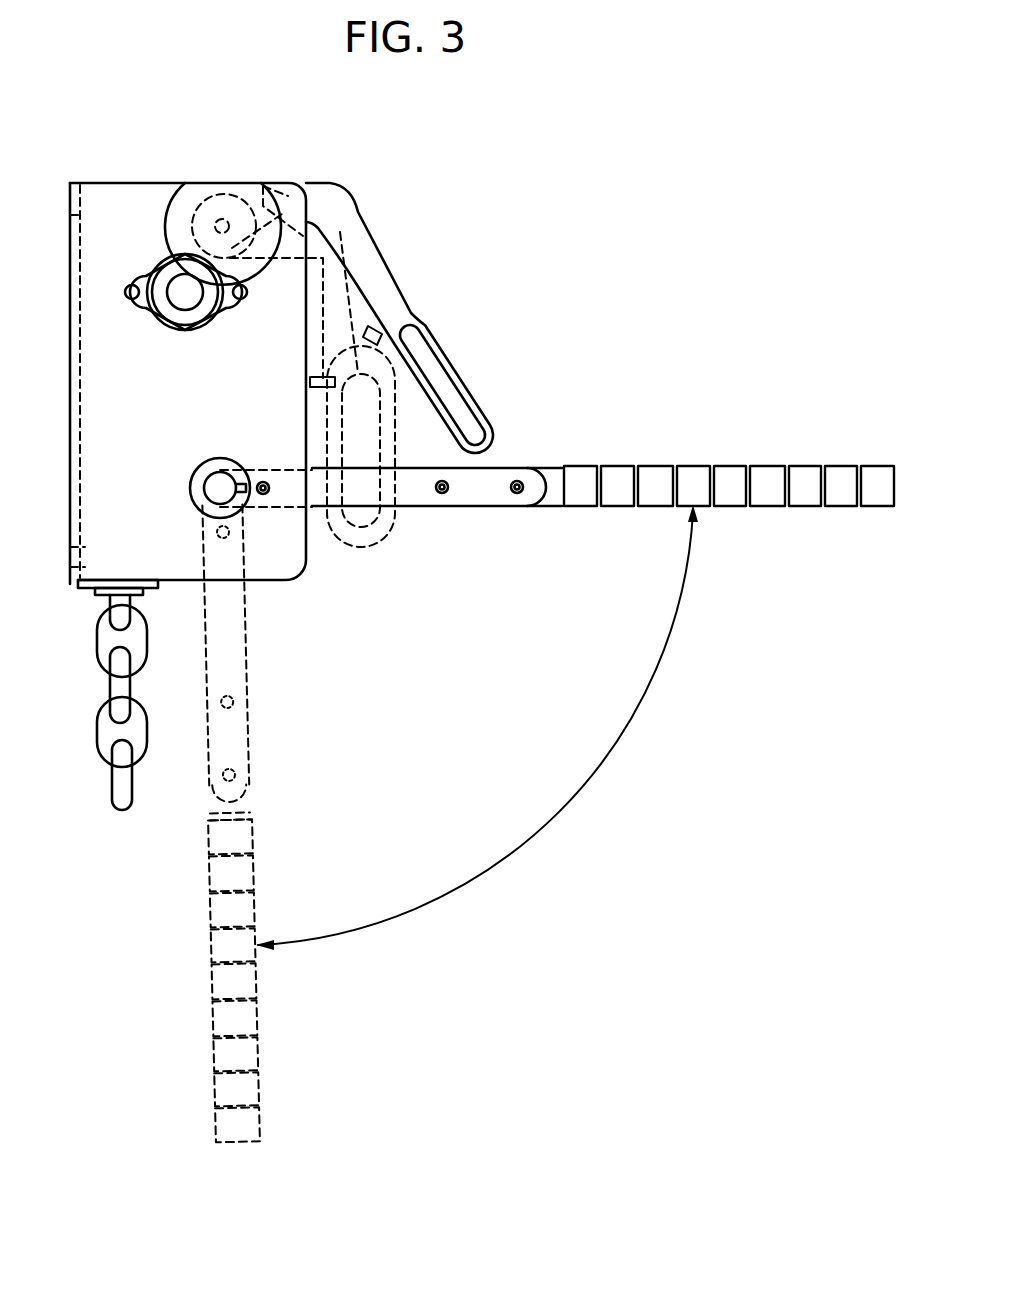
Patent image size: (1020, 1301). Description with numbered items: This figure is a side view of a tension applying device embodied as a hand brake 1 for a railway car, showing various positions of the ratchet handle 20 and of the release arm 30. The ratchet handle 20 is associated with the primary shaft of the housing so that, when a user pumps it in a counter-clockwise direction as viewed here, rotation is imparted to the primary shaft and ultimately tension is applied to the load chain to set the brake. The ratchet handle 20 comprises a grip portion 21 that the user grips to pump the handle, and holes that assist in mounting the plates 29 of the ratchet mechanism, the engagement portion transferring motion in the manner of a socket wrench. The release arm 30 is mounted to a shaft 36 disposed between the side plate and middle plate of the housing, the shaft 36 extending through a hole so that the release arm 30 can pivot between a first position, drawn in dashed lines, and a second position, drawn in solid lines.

The hand brake 1 is at (153, 152).
The ratchet handle 20 is at (836, 476).
The grip portion 21 is at (715, 476).
The mounting plates 29 is at (482, 490).
The release arm 30 is at (374, 270).
The shaft 36 is at (222, 226).